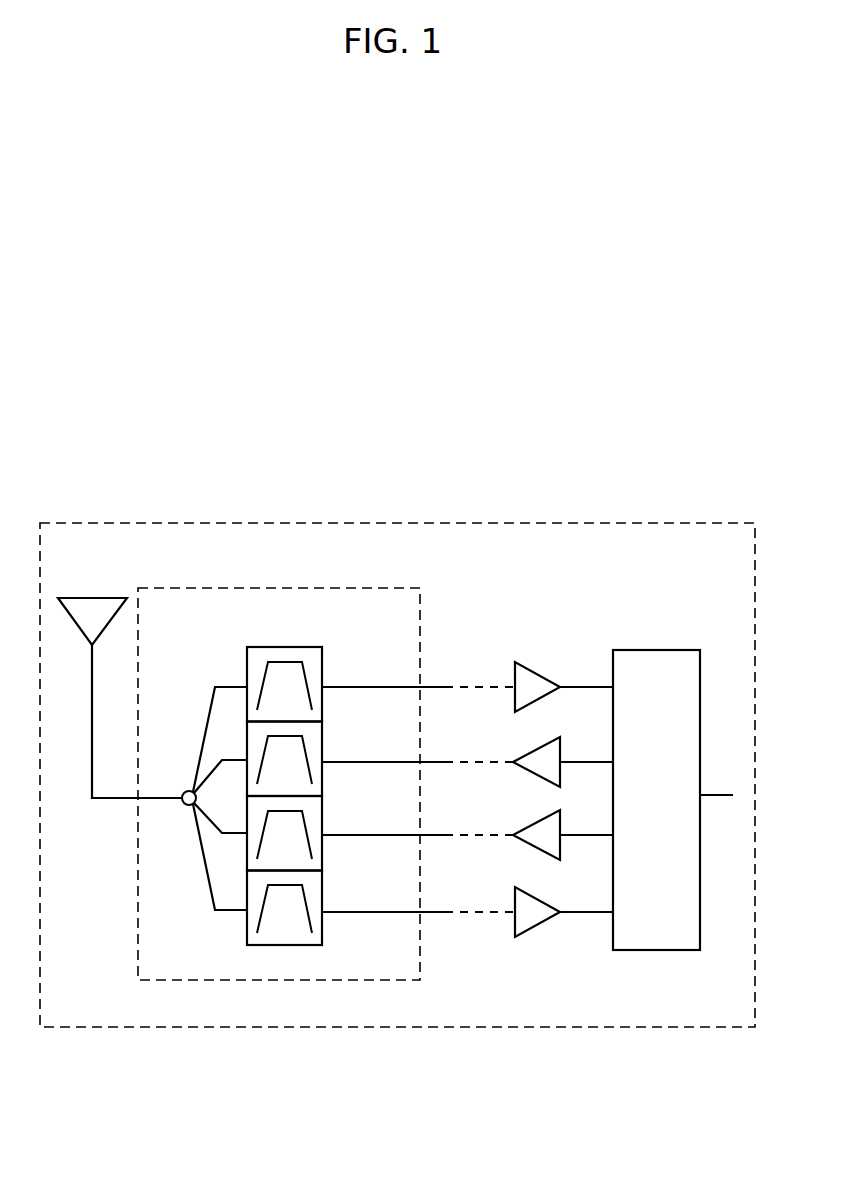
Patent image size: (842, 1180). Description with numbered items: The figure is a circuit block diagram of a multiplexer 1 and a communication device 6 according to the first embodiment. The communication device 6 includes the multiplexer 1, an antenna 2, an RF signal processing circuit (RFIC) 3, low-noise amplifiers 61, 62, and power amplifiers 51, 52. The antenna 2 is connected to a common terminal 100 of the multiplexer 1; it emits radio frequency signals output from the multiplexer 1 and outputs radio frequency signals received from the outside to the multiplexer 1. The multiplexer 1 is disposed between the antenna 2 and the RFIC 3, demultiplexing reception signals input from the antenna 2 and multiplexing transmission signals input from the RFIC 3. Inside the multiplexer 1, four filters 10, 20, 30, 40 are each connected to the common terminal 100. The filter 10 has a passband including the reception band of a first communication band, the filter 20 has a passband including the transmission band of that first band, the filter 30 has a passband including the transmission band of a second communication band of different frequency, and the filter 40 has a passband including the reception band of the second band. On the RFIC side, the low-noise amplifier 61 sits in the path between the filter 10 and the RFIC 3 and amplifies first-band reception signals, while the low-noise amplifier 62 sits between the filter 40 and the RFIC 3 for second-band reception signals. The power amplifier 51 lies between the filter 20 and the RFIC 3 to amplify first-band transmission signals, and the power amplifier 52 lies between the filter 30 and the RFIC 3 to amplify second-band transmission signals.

The multiplexer 1 is at (375, 588).
The antenna 2 is at (91, 598).
The RF signal processing circuit (RFIC) 3 is at (665, 650).
The communication device 6 is at (698, 523).
The filter 10 is at (322, 672).
The filter 20 is at (322, 747).
The filter 30 is at (322, 820).
The filter 40 is at (322, 895).
The power amplifier 51 is at (559, 741).
The power amplifier 52 is at (561, 851).
The low-noise amplifier 61 is at (540, 671).
The low-noise amplifier 62 is at (535, 922).
The common terminal 100 is at (184, 805).